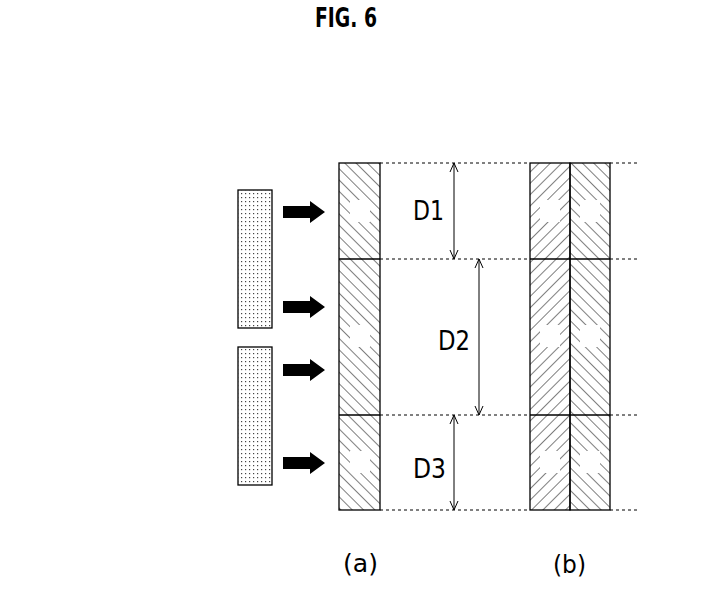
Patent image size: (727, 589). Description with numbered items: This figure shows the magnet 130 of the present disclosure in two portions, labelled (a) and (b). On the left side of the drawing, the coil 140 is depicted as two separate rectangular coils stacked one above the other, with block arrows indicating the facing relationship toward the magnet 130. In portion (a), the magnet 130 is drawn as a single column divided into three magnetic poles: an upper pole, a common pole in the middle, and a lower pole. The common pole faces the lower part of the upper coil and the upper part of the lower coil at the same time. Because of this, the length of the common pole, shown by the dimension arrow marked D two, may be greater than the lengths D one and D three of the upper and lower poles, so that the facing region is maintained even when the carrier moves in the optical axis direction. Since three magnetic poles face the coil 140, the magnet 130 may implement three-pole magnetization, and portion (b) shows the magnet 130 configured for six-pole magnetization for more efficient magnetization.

The magnet 130 is at (363, 170).
The coil 140 is at (162, 337).